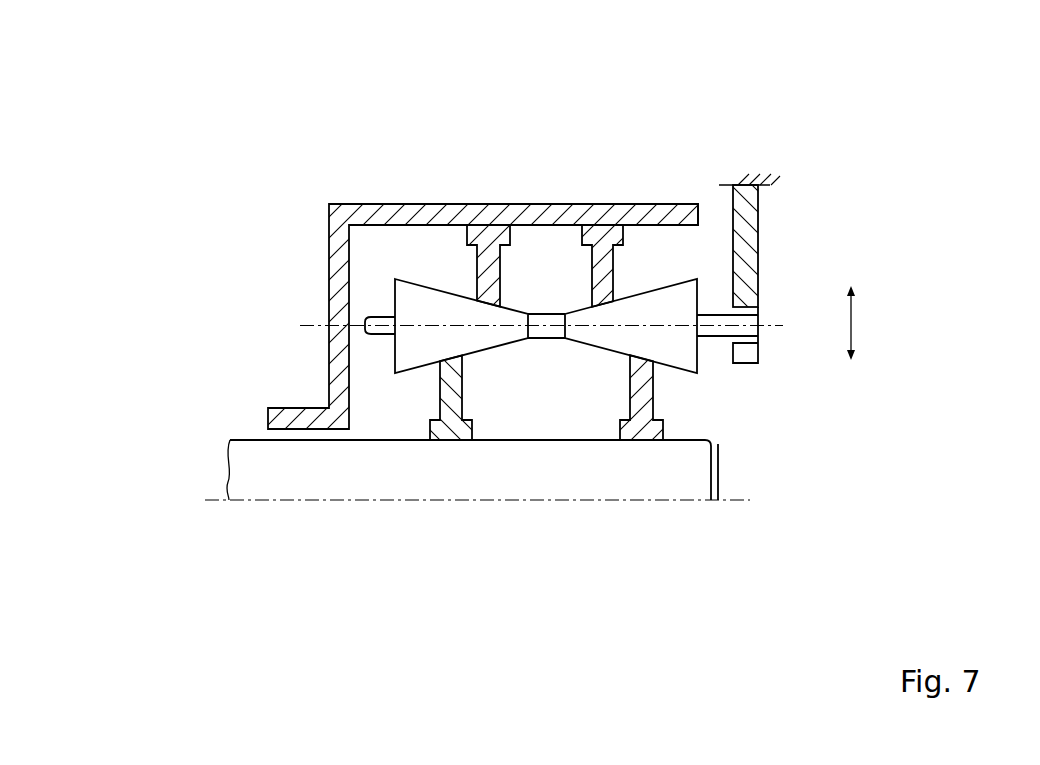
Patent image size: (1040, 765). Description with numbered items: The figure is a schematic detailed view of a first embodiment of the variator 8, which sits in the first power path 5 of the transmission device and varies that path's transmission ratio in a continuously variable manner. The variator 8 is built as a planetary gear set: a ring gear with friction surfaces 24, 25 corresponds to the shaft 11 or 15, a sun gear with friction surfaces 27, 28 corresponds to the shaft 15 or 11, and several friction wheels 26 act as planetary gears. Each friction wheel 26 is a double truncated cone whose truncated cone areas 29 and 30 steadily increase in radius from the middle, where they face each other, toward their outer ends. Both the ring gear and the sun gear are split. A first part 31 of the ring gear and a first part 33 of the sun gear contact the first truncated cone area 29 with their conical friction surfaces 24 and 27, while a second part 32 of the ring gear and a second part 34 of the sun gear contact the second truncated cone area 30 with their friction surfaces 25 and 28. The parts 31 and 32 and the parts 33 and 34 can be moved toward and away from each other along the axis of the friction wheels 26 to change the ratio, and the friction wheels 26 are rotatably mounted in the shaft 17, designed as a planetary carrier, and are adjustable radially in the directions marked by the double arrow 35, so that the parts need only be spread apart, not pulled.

The first power path 5 is at (238, 371).
The variator 8 is at (315, 164).
The shaft 11 is at (553, 206).
The shaft 15 is at (543, 473).
The shaft 17 is at (760, 220).
The friction surface 24 is at (490, 296).
The friction surface 25 is at (665, 292).
The friction wheel 26 is at (719, 366).
The friction surface 27 is at (458, 362).
The friction surface 28 is at (698, 373).
The first truncated cone area 29 is at (481, 338).
The second truncated cone area 30 is at (697, 373).
The first part of the ring gear 31 is at (490, 292).
The second part of the ring gear 32 is at (660, 293).
The first part of the sun gear 33 is at (447, 441).
The second part of the sun gear 34 is at (653, 441).
The double arrow 35 is at (846, 323).